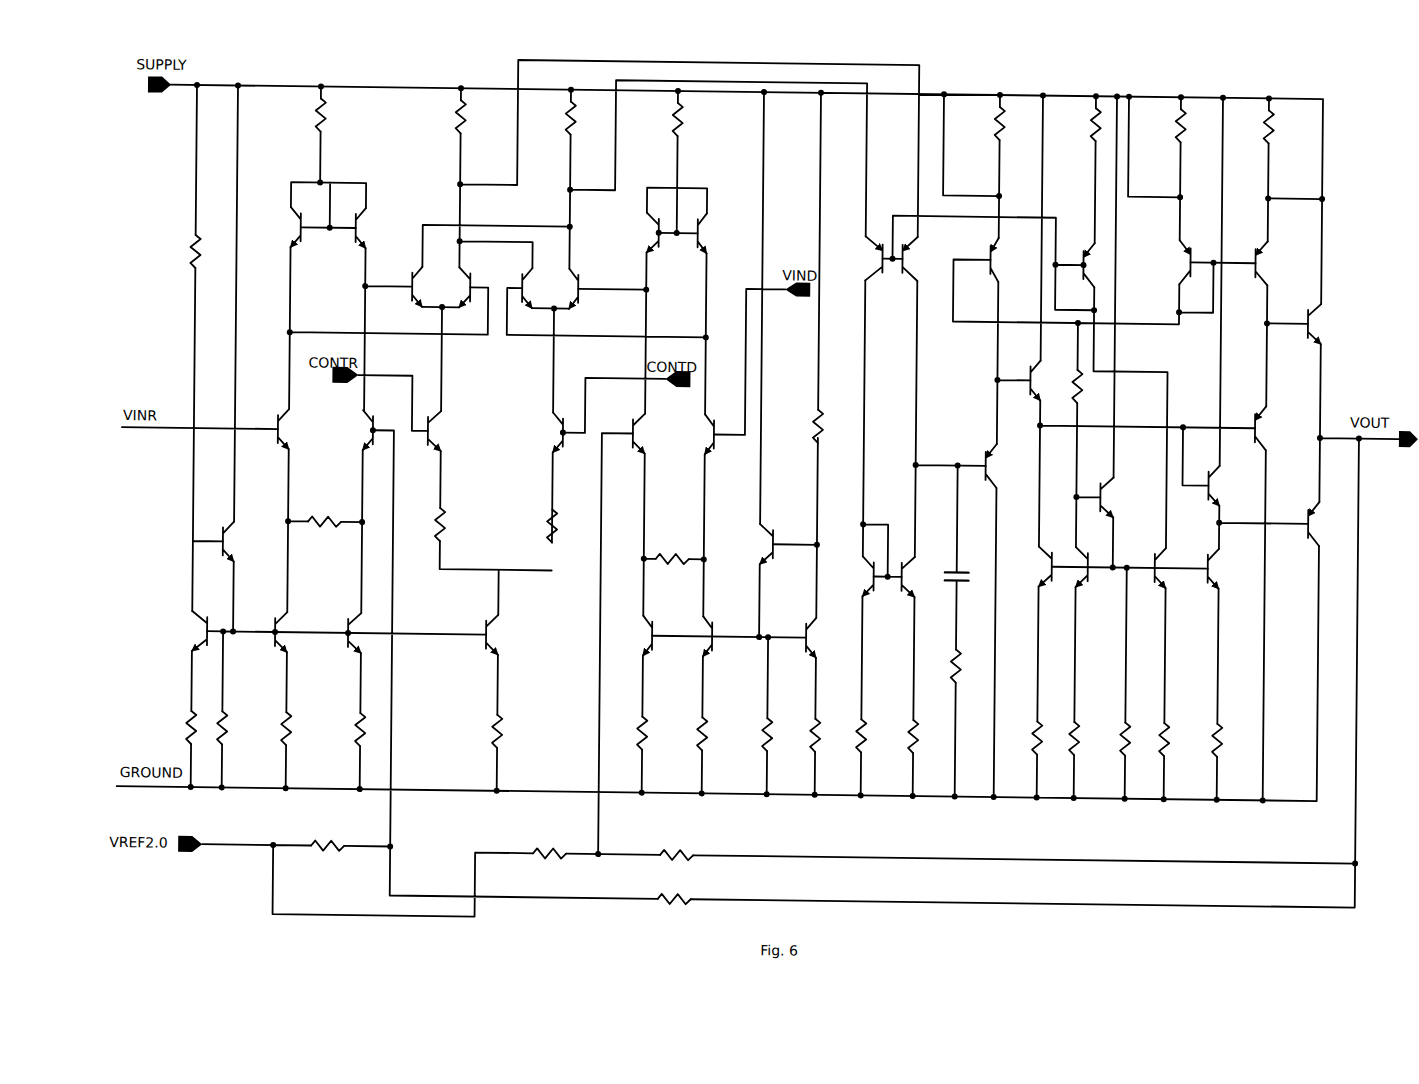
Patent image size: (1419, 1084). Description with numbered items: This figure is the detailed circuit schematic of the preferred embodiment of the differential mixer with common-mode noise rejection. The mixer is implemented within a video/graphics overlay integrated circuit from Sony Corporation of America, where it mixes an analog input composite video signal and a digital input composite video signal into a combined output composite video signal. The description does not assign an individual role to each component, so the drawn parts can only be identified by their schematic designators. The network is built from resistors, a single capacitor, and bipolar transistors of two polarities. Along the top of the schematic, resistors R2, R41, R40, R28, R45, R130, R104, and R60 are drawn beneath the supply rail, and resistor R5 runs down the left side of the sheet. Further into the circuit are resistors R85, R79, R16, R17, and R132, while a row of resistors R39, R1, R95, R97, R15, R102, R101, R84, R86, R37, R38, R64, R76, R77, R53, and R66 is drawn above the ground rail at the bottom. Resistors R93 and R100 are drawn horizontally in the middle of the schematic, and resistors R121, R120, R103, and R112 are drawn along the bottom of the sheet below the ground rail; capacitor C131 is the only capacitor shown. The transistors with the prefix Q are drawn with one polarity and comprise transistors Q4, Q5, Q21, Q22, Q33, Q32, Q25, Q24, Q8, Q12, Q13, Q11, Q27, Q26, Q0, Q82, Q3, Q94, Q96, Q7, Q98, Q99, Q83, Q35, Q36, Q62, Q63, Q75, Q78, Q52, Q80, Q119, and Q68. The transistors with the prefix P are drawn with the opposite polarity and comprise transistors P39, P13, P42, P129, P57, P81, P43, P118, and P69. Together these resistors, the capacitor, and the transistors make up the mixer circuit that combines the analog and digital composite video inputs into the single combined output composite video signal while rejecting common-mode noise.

The resistor R2 is at (310, 115).
The resistor R41 is at (445, 118).
The resistor R40 is at (553, 119).
The resistor R28 is at (658, 119).
The resistor R45 is at (985, 124).
The resistor R130 is at (1075, 125).
The resistor R104 is at (1160, 126).
The resistor R60 is at (1287, 127).
The resistor R5 is at (181, 251).
The resistor R85 is at (802, 426).
The resistor R79 is at (1090, 396).
The resistor R16 is at (424, 525).
The resistor R17 is at (538, 525).
The resistor R132 is at (972, 665).
The resistor R39 is at (173, 727).
The resistor R1 is at (232, 727).
The resistor R95 is at (298, 725).
The resistor R97 is at (371, 726).
The resistor R15 is at (509, 728).
The resistor R102 is at (657, 729).
The resistor R101 is at (717, 731).
The resistor R84 is at (780, 732).
The resistor R86 is at (826, 733).
The resistor R37 is at (872, 733).
The resistor R38 is at (923, 734).
The resistor R64 is at (1047, 736).
The resistor R76 is at (1084, 736).
The resistor R77 is at (1135, 737).
The resistor R53 is at (1174, 737).
The resistor R66 is at (1228, 738).
The resistor R93 is at (324, 515).
The resistor R100 is at (670, 553).
The resistor R121 is at (331, 858).
The resistor R120 is at (552, 866).
The resistor R103 is at (674, 868).
The resistor R112 is at (677, 914).
The capacitor C131 is at (960, 567).
The NPN transistor Q4 is at (303, 227).
The NPN transistor Q5 is at (350, 228).
The NPN transistor Q21 is at (408, 284).
The NPN transistor Q22 is at (474, 285).
The NPN transistor Q33 is at (542, 286).
The NPN transistor Q32 is at (586, 287).
The NPN transistor Q25 is at (642, 232).
The NPN transistor Q24 is at (713, 233).
The NPN transistor Q8 is at (274, 424).
The NPN transistor Q12 is at (378, 426).
The NPN transistor Q13 is at (425, 426).
The NPN transistor Q11 is at (566, 428).
The NPN transistor Q27 is at (629, 428).
The NPN transistor Q26 is at (722, 429).
The NPN transistor Q0 is at (221, 537).
The NPN transistor Q82 is at (777, 540).
The NPN transistor Q3 is at (202, 625).
The NPN transistor Q94 is at (269, 626).
The NPN transistor Q96 is at (342, 627).
The NPN transistor Q7 is at (484, 628).
The NPN transistor Q98 is at (661, 631).
The NPN transistor Q99 is at (718, 631).
The NPN transistor Q83 is at (796, 631).
The NPN transistor Q35 is at (854, 576).
The NPN transistor Q36 is at (916, 577).
The NPN transistor Q62 is at (1046, 380).
The NPN transistor Q63 is at (1032, 566).
The NPN transistor Q75 is at (1091, 565).
The NPN transistor Q78 is at (1117, 497).
The NPN transistor Q52 is at (1148, 566).
The NPN transistor Q80 is at (1224, 569).
The NPN transistor Q119 is at (1229, 486).
The NPN transistor Q68 is at (1326, 324).
The PNP transistor P39 is at (864, 258).
The PNP transistor P13 is at (918, 259).
The PNP transistor P42 is at (982, 260).
The PNP transistor P129 is at (1088, 261).
The PNP transistor P57 is at (1193, 262).
The PNP transistor P81 is at (1252, 263).
The PNP transistor P43 is at (1000, 466).
The PNP transistor P118 is at (1273, 430).
The PNP transistor P69 is at (1326, 524).